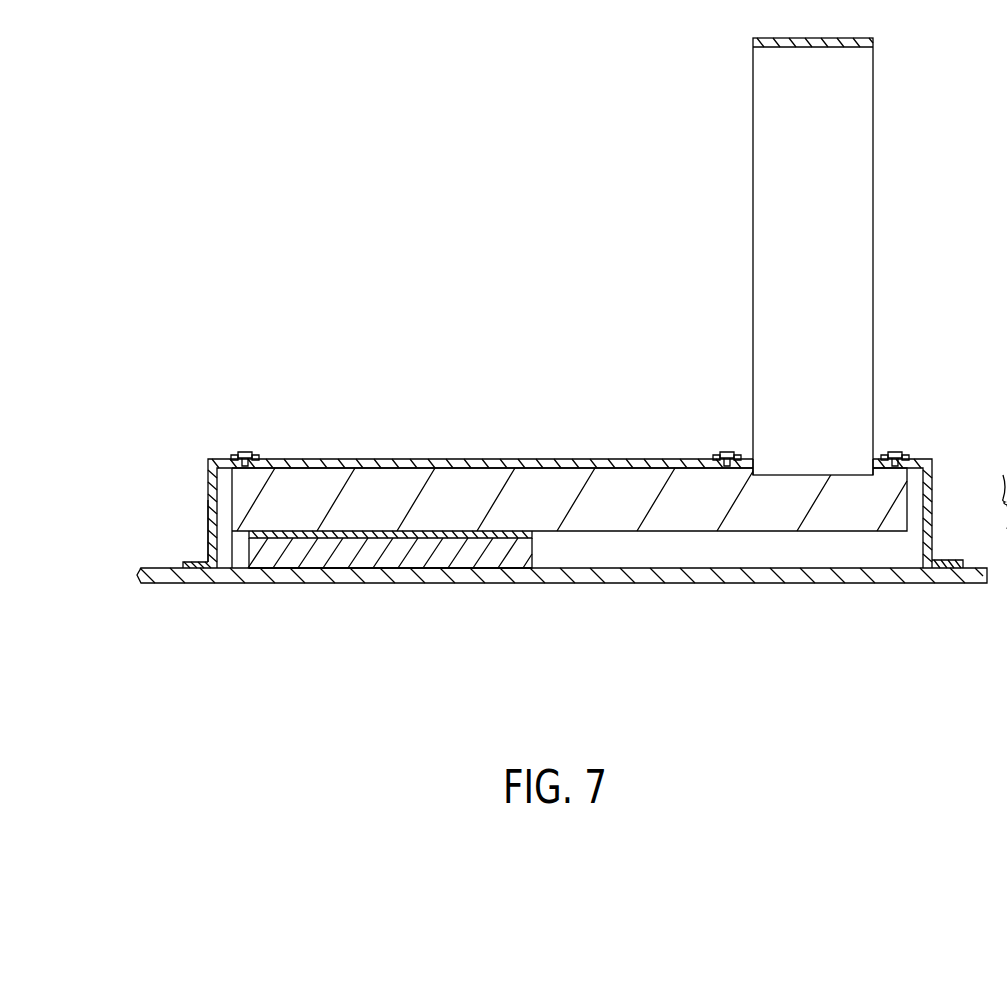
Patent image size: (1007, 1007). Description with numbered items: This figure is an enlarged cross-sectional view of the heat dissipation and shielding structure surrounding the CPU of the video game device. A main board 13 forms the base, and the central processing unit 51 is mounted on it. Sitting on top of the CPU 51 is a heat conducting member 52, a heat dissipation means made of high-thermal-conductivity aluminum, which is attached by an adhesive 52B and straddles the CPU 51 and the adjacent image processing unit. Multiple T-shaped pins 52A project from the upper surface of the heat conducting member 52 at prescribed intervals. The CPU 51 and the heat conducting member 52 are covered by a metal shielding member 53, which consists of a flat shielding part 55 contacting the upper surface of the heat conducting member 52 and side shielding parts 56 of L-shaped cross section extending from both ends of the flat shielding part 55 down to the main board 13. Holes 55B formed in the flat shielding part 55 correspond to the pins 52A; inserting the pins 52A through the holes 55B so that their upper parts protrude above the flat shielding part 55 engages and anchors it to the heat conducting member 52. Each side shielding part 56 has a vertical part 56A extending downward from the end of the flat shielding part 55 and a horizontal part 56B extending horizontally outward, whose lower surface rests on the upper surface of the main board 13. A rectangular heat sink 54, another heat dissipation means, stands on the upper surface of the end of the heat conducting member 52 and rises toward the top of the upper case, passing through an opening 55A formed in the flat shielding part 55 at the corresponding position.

The main board 13 is at (165, 570).
The central processing unit (CPU) 51 is at (315, 558).
The heat conducting member 52 is at (457, 513).
The T-shaped pins 52A is at (247, 452).
The adhesive 52B is at (508, 532).
The shielding member 53 is at (315, 460).
The rectangular heat sink 54 is at (862, 160).
The flat shielding part 55 is at (420, 460).
The opening 55A is at (752, 456).
The holes 55B is at (232, 462).
The side shielding parts 56 is at (268, 638).
The vertical part 56A is at (930, 490).
The horizontal part 56B is at (940, 560).